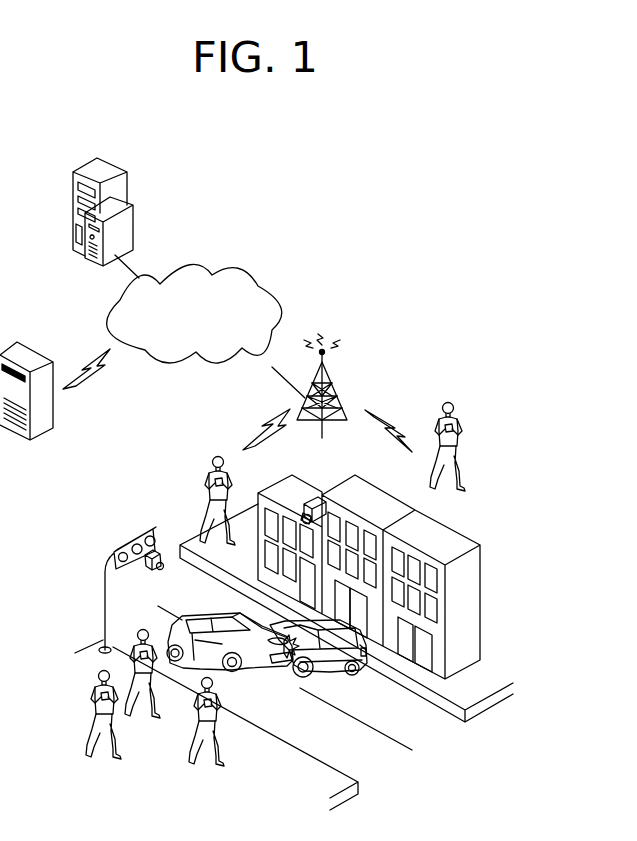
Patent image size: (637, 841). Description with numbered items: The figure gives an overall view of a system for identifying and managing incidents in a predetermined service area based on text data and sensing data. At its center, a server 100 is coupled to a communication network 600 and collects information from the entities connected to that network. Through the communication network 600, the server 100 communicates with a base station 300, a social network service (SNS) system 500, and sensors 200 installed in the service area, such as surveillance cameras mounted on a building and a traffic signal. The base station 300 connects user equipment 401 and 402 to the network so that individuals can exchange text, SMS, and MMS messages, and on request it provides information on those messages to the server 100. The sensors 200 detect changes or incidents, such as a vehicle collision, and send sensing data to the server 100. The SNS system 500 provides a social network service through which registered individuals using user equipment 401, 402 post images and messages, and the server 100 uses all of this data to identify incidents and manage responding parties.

The server 100 is at (127, 192).
The sensors 200 is at (316, 496).
The base station 300 is at (331, 378).
The user equipment 401 is at (230, 465).
The user equipment 402 is at (438, 416).
The social network service (SNS) system 500 is at (38, 351).
The communication network 600 is at (237, 276).